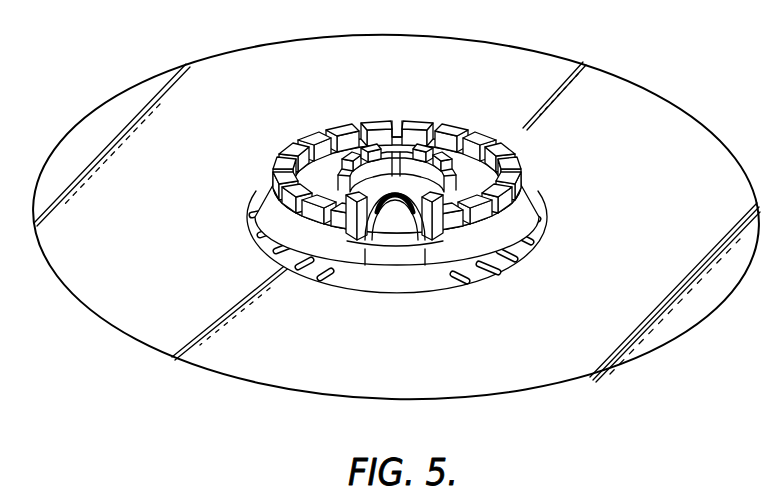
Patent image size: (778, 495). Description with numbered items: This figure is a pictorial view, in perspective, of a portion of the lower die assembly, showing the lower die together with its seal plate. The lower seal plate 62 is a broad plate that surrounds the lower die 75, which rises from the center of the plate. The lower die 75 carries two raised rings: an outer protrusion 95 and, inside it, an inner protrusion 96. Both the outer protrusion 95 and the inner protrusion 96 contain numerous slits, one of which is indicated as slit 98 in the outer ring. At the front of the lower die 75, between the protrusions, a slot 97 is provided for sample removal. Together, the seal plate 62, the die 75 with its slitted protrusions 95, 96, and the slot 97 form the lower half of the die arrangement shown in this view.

The lower seal plate 62 is at (552, 52).
The lower die 75 is at (527, 184).
The outer protrusion 95 is at (460, 134).
The inner protrusion 96 is at (387, 150).
The slot 97 is at (401, 250).
The slit 98 is at (396, 121).